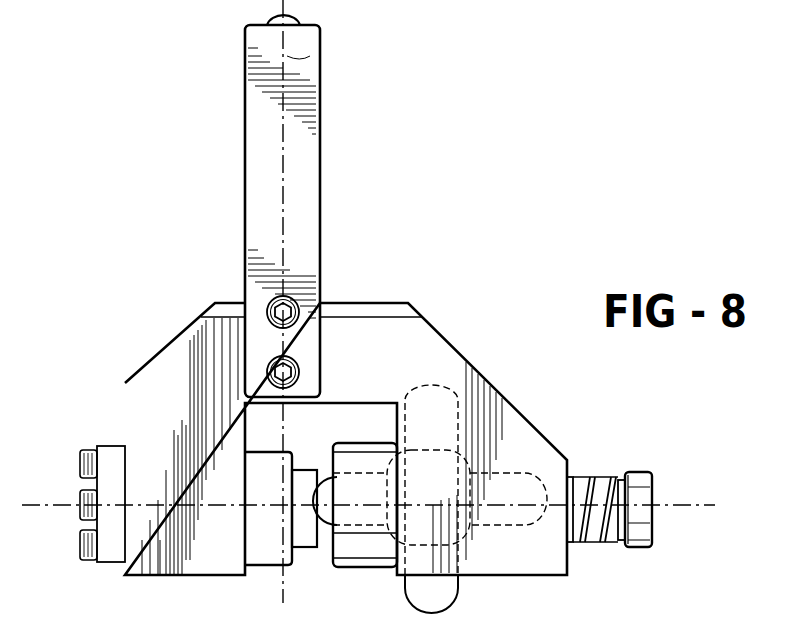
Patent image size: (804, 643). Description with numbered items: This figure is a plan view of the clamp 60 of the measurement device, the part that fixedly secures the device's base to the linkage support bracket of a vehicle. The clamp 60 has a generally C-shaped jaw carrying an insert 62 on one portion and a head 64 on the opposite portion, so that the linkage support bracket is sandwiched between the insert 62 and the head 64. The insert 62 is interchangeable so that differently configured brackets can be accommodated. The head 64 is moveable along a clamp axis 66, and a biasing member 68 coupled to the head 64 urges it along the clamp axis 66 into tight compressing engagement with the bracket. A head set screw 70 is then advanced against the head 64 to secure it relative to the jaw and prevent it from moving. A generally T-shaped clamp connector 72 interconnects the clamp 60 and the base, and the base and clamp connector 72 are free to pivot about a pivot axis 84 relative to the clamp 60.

The clamp 60 is at (433, 348).
The insert 62 is at (266, 566).
The head 64 is at (357, 570).
The clamp axis 66 is at (675, 505).
The biasing member 68 is at (588, 477).
The head set screw 70 is at (458, 590).
The clamp connector 72 is at (318, 201).
The pivot axis 84 is at (318, 53).